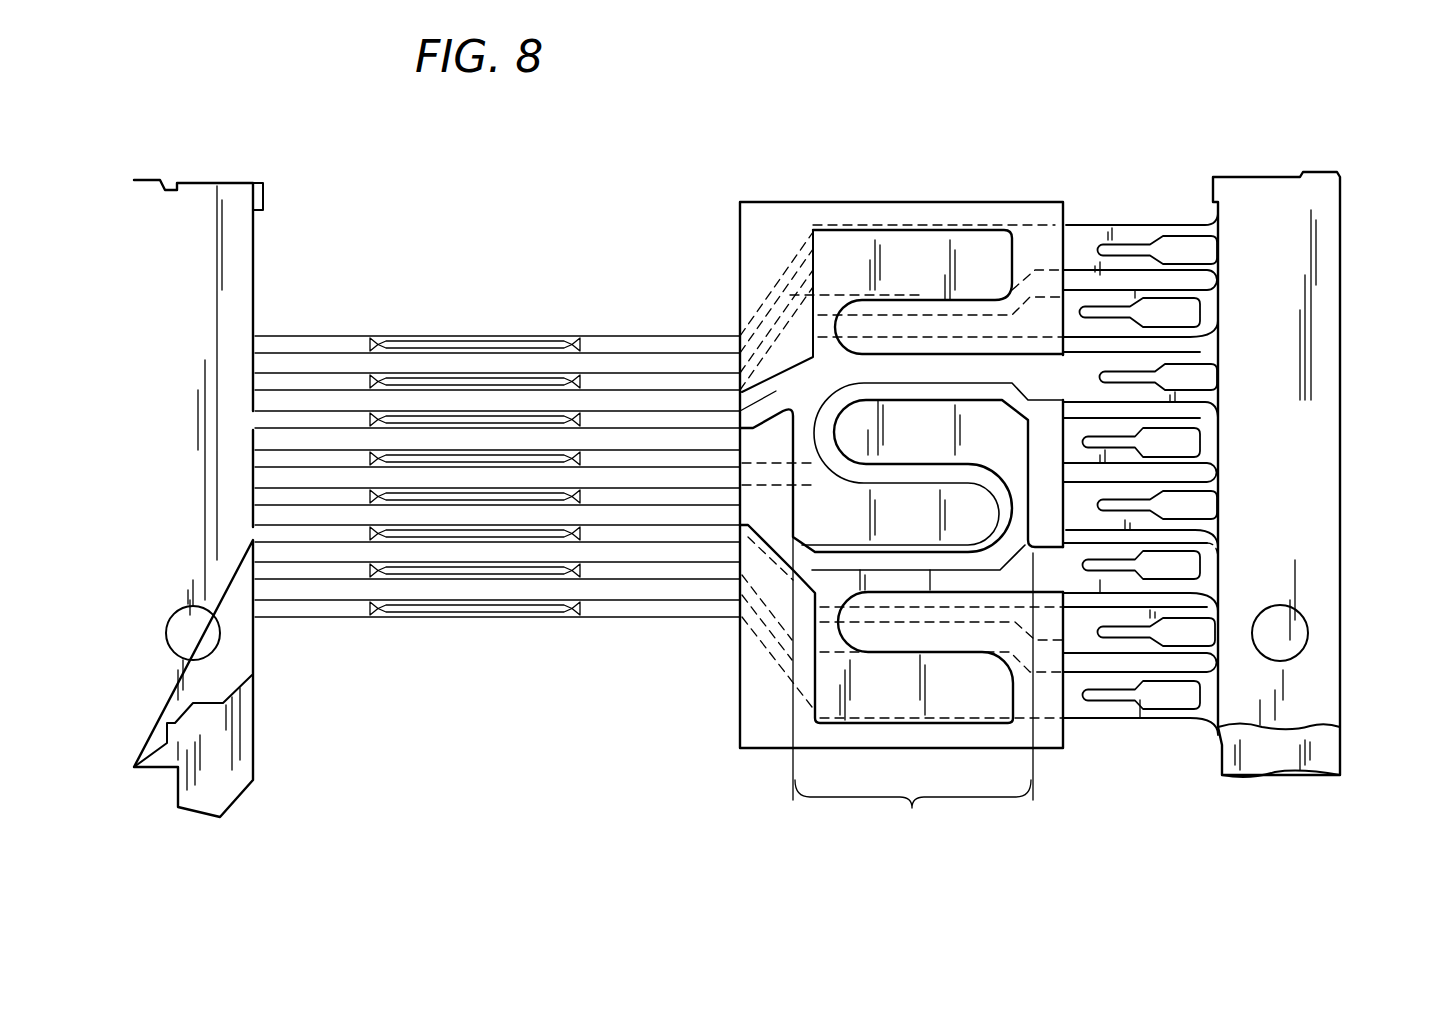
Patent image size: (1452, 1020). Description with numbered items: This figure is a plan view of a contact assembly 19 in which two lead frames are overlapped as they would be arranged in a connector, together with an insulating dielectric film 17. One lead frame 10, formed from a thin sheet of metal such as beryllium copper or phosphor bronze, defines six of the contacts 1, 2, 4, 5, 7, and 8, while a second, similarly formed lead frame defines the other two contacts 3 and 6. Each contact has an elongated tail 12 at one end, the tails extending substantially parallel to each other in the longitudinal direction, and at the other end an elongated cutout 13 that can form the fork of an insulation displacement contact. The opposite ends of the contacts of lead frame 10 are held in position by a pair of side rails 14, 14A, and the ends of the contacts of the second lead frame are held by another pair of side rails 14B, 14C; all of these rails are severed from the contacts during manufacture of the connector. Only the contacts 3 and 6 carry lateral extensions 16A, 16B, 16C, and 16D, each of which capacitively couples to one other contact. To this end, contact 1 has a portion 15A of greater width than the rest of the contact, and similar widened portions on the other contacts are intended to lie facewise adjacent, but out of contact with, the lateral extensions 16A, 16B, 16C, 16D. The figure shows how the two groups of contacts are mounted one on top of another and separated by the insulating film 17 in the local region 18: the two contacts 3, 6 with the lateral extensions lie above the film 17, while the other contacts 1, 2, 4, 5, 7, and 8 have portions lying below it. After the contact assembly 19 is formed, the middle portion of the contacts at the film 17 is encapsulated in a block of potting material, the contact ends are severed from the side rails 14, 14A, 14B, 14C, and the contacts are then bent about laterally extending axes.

The contact 1 is at (526, 336).
The contact 2 is at (597, 372).
The contact 3 is at (628, 410).
The contact 4 is at (665, 450).
The contact 5 is at (598, 506).
The contact 6 is at (628, 544).
The contact 7 is at (658, 580).
The contact 8 is at (678, 618).
The lead frame 10 is at (1361, 190).
The elongated tail 12 is at (398, 336).
The elongated cutout 13 is at (1177, 235).
The side rail 14 is at (1322, 748).
The side rail 14A is at (132, 410).
The side rail 14B is at (1322, 697).
The side rail 14C is at (170, 762).
The portion of greater width 15A is at (790, 262).
The lateral extension 16A is at (858, 245).
The lateral extension 16B is at (925, 432).
The lateral extension 16C is at (906, 522).
The lateral extension 16D is at (963, 690).
The insulating film 17 is at (1033, 212).
The local region 18 is at (913, 815).
The contact assembly 19 is at (1128, 750).